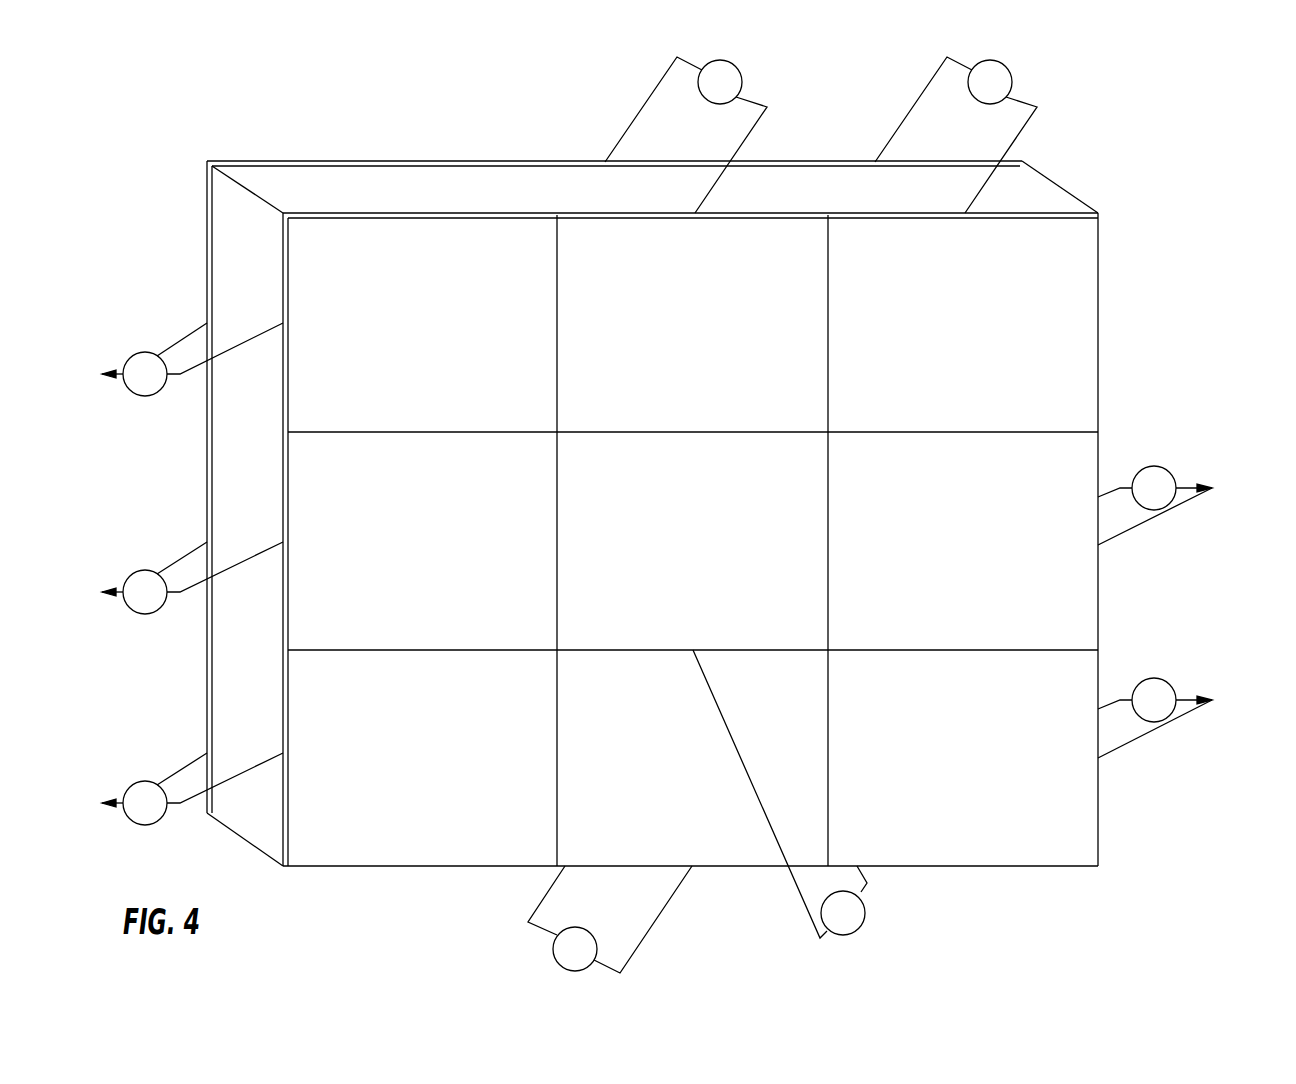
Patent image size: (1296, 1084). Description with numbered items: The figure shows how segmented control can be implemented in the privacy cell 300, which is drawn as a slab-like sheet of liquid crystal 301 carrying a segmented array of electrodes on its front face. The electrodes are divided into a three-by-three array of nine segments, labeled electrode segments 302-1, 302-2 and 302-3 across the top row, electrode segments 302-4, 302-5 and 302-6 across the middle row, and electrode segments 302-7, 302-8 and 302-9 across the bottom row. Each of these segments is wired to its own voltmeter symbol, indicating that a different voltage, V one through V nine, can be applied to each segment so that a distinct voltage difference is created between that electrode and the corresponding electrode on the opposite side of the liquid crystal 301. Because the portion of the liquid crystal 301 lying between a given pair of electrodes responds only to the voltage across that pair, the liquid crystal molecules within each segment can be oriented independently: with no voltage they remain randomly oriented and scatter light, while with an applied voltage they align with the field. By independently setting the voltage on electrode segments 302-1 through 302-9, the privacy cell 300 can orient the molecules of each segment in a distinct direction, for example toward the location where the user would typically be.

The privacy cell 300 is at (1183, 110).
The sheet of liquid crystal 301 is at (276, 162).
The electrode segment 302-1 is at (450, 336).
The electrode segment 302-2 is at (721, 336).
The electrode segment 302-3 is at (992, 336).
The electrode segment 302-4 is at (450, 553).
The electrode segment 302-5 is at (721, 553).
The electrode segment 302-6 is at (992, 553).
The electrode segment 302-7 is at (450, 770).
The electrode segment 302-8 is at (721, 770).
The electrode segment 302-9 is at (992, 770).